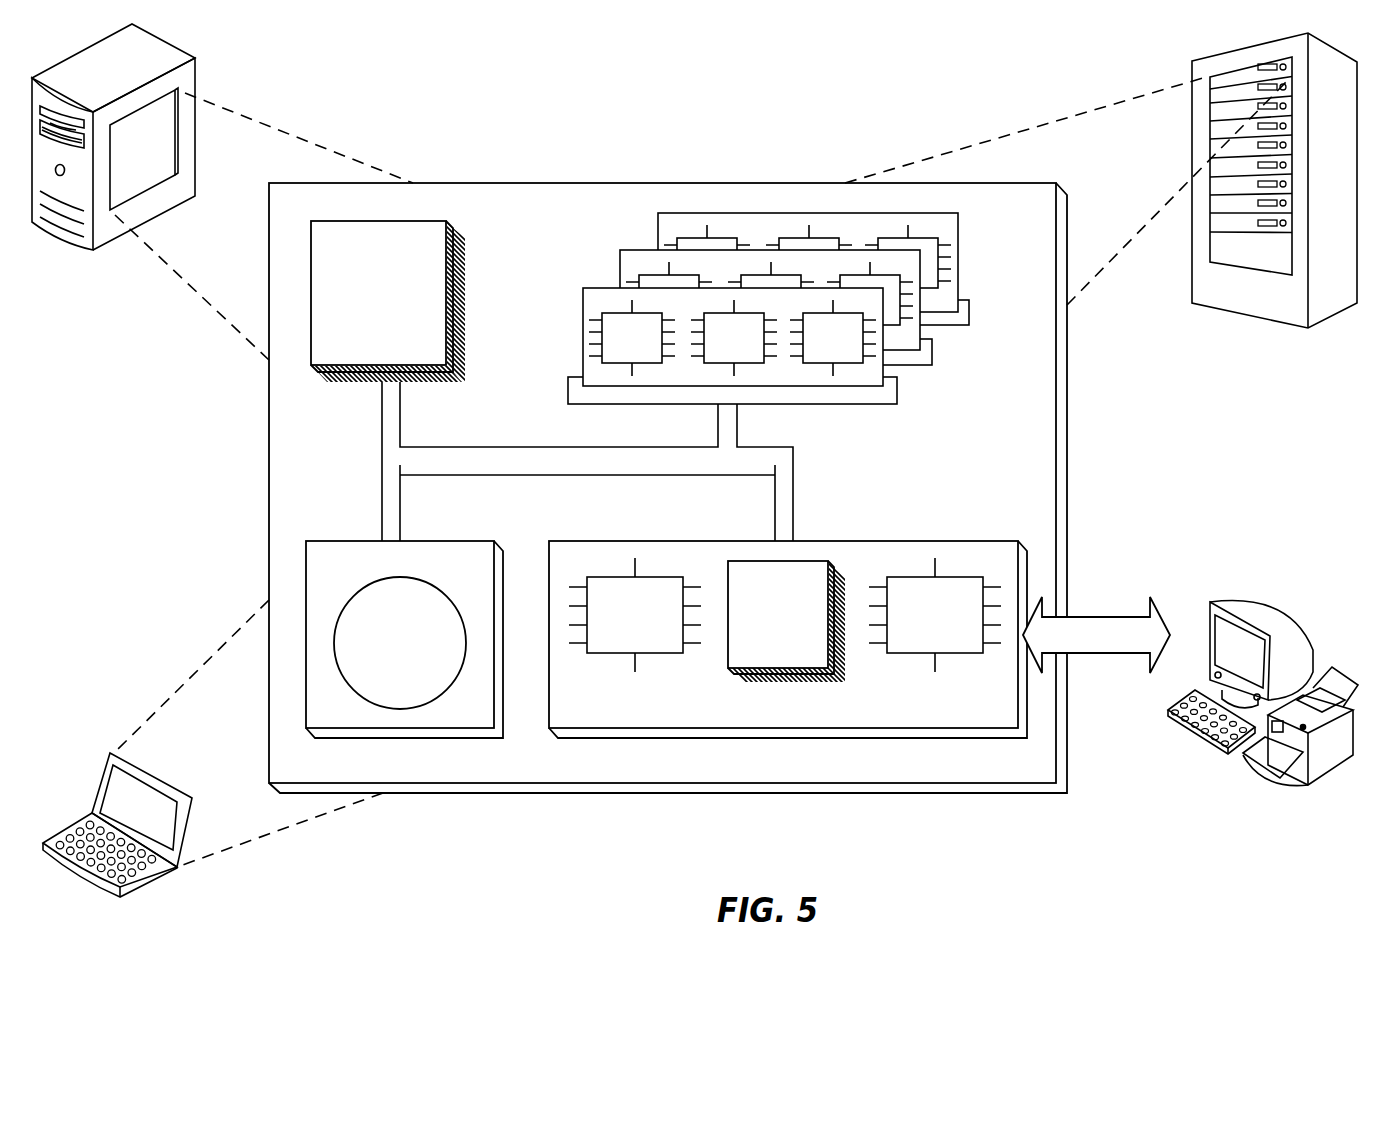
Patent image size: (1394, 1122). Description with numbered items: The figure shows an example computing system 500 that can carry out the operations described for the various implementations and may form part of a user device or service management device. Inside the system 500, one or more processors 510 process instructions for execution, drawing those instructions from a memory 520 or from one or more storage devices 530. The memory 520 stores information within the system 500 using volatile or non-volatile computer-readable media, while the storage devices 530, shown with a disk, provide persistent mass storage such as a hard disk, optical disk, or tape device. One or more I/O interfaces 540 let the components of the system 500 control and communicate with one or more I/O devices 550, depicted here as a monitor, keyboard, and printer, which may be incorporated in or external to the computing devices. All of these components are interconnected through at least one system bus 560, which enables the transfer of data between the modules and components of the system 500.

The computing system 500 is at (476, 94).
The processor 510 is at (438, 356).
The memory 520 is at (964, 366).
The storage device 530 is at (484, 719).
The input/output interface 540 is at (904, 719).
The input/output device 550 is at (1205, 606).
The system bus 560 is at (583, 465).